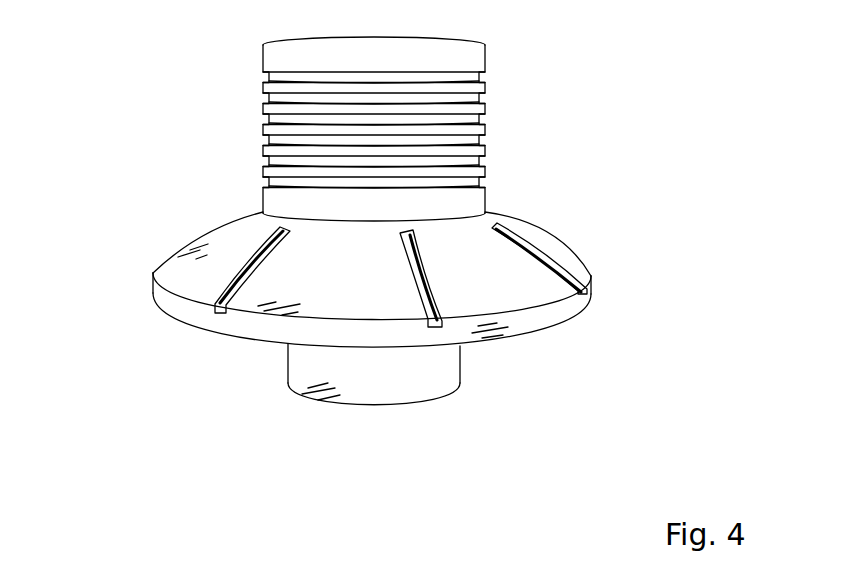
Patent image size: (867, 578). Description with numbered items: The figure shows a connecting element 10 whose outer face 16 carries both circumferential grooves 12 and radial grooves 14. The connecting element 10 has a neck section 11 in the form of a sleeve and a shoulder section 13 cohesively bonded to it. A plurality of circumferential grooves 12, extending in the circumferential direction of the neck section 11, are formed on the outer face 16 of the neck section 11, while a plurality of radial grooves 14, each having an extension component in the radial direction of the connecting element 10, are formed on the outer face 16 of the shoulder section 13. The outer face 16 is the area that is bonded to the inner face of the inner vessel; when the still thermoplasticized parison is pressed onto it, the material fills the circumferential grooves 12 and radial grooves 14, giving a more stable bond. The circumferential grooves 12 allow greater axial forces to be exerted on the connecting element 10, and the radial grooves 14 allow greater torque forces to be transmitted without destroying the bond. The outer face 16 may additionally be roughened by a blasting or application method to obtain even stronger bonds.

The connecting element 10 is at (400, 281).
The neck section 11 is at (399, 128).
The circumferential grooves 12 is at (280, 77).
The shoulder section 13 is at (558, 250).
The radial grooves 14 is at (587, 288).
The outer face 16 is at (400, 281).